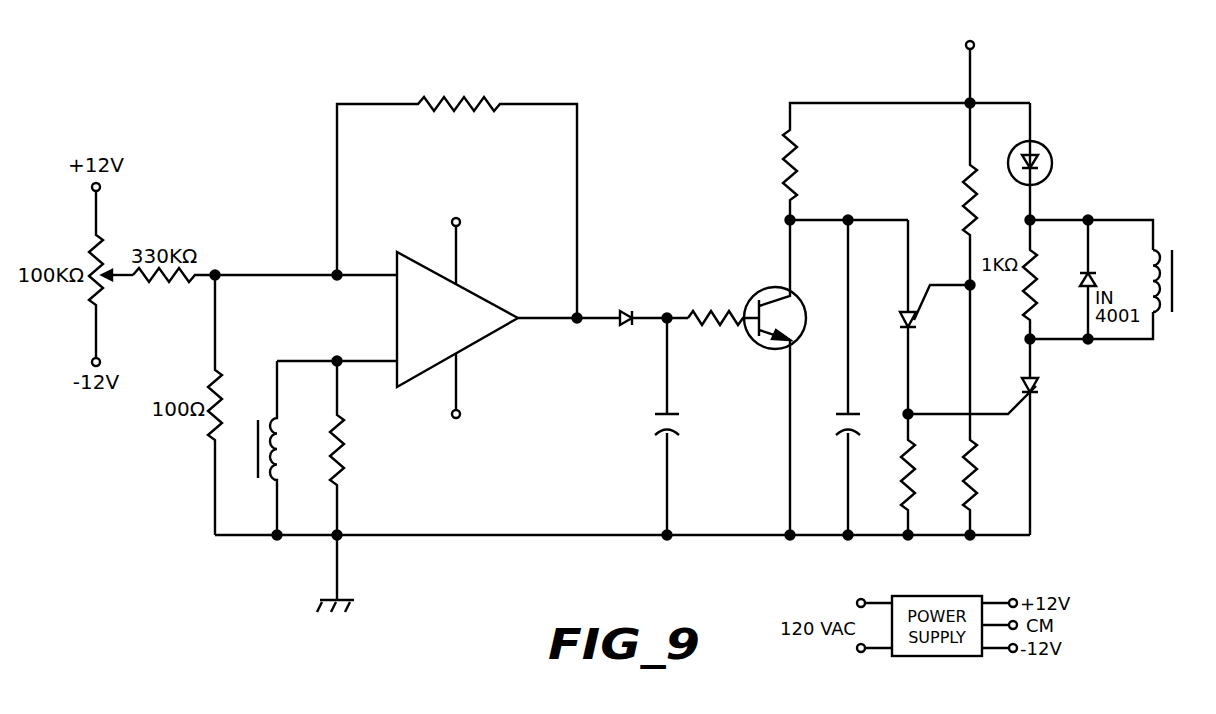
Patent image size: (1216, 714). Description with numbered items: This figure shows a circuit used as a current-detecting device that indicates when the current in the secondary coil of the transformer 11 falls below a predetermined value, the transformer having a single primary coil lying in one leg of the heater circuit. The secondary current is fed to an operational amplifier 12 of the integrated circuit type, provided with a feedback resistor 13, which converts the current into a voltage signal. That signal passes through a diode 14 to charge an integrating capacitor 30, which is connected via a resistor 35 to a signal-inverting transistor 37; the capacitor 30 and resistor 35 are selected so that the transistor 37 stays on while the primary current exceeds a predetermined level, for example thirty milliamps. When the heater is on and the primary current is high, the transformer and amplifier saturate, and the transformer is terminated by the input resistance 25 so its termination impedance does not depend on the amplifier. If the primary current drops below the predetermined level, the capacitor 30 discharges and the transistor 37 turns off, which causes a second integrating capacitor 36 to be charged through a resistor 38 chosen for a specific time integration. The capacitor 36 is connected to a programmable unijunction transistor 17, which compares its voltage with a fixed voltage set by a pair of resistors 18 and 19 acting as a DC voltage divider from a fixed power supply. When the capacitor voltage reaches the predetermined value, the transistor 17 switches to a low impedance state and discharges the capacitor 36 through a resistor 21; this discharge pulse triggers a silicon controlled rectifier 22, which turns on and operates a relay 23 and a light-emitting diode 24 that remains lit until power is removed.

The transformer 11 is at (280, 468).
The operational amplifier 12 is at (487, 336).
The feedback resistor 13 is at (470, 108).
The diode 14 is at (625, 324).
The programmable unijunction transistor 17 is at (906, 320).
The resistor 18 is at (966, 168).
The resistor 19 is at (976, 480).
The resistor 21 is at (900, 482).
The silicon controlled rectifier 22 is at (1040, 385).
The relay 23 is at (1162, 316).
The light-emitting diode 24 is at (1053, 165).
The input resistance 25 is at (340, 490).
The integrating capacitor 30 is at (660, 434).
The resistor 35 is at (732, 322).
The second integrating capacitor 36 is at (842, 434).
The signal-inverting transistor 37 is at (764, 349).
The resistor 38 is at (798, 178).